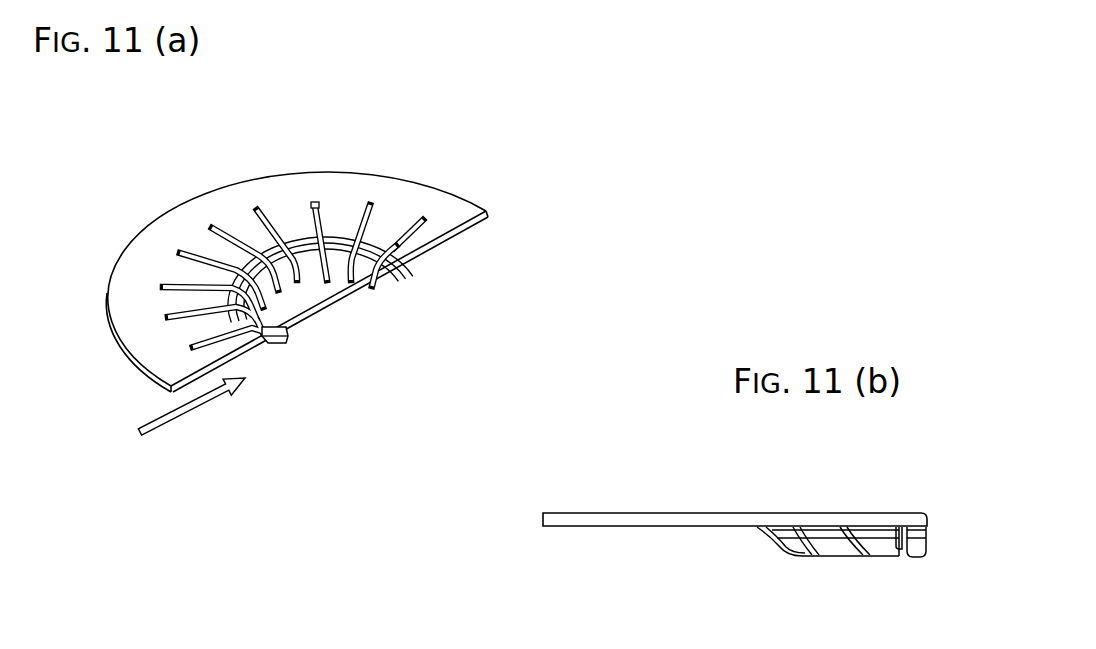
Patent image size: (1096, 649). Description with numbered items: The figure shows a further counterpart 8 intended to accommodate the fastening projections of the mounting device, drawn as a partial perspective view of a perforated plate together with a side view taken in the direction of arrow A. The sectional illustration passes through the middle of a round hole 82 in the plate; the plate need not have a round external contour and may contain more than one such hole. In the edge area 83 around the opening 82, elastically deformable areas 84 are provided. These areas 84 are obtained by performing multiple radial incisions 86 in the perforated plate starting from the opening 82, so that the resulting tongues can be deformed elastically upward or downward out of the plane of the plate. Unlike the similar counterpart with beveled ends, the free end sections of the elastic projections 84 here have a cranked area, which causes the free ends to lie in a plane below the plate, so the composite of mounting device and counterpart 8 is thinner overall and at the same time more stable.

The counterpart 8 is at (485, 129).
The round hole 82 is at (327, 310).
The edge area 83 is at (438, 267).
The elastically deformable area 84 is at (337, 222).
The radial incision 86 is at (313, 200).